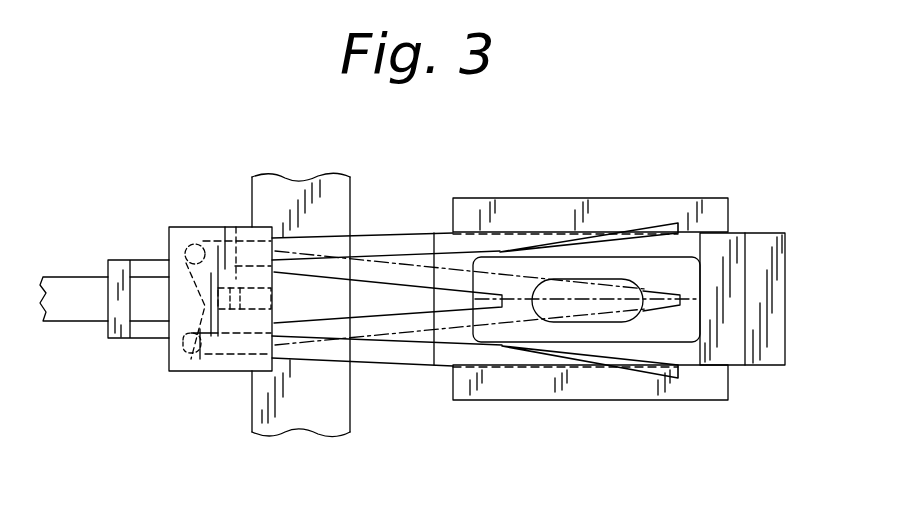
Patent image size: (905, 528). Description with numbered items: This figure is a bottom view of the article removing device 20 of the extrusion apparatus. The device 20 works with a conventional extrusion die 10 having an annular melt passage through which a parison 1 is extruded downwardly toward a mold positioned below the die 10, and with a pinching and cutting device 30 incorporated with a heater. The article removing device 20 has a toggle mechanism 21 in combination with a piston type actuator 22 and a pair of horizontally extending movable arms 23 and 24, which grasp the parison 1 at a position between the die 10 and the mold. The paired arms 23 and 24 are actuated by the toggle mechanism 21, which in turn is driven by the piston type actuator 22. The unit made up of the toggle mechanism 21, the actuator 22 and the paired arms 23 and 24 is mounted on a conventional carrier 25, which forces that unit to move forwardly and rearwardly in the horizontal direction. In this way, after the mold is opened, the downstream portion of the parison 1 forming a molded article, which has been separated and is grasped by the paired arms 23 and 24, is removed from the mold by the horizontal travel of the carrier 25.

The parison 1 is at (633, 313).
The die 10 is at (704, 198).
The article removing device 20 is at (188, 227).
The toggle mechanism 21 is at (192, 373).
The piston type actuator 22 is at (236, 226).
The movable arm 23 is at (596, 223).
The movable arm 24 is at (532, 372).
The carrier 25 is at (313, 177).
The pinching and cutting device 30 is at (785, 295).